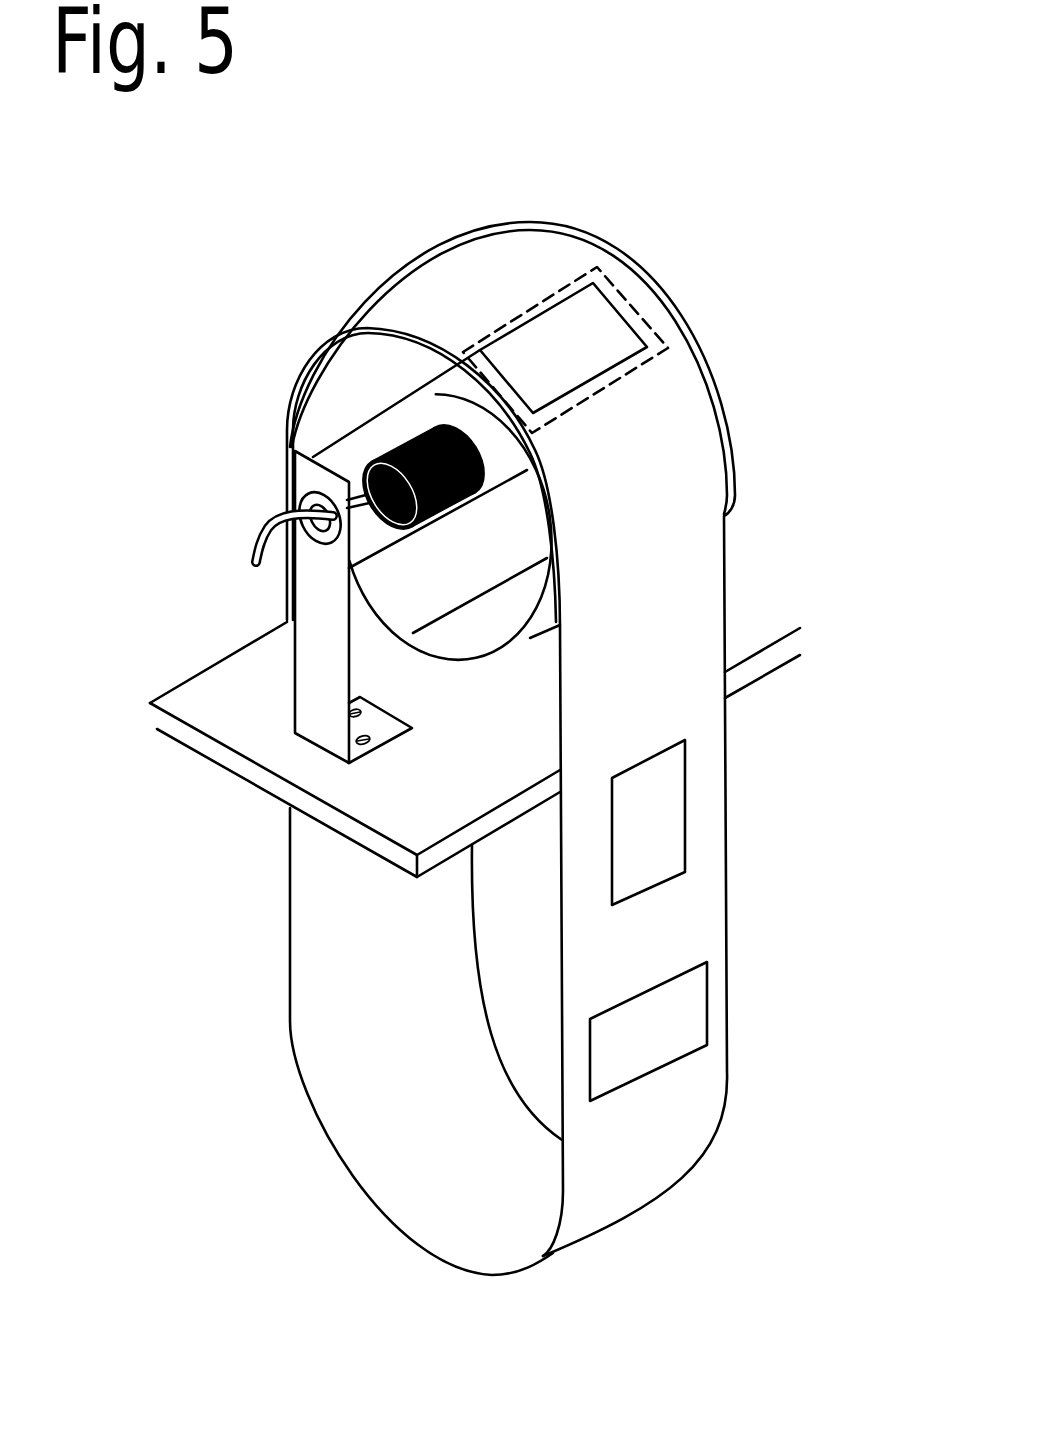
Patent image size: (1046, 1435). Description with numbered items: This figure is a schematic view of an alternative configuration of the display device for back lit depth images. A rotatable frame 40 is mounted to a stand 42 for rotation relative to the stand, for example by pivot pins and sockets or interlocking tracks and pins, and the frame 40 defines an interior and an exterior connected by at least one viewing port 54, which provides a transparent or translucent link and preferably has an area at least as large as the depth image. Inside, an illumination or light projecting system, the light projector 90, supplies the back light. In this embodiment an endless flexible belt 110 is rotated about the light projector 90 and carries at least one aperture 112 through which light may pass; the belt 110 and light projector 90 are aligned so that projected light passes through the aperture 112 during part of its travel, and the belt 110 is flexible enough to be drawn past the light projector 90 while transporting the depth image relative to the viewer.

The rotatable frame 40 is at (605, 748).
The stand 42 is at (424, 769).
The viewing port 54 is at (645, 314).
The light projector 90 is at (408, 427).
The flexible belt 110 is at (730, 565).
The aperture 112 is at (535, 338).